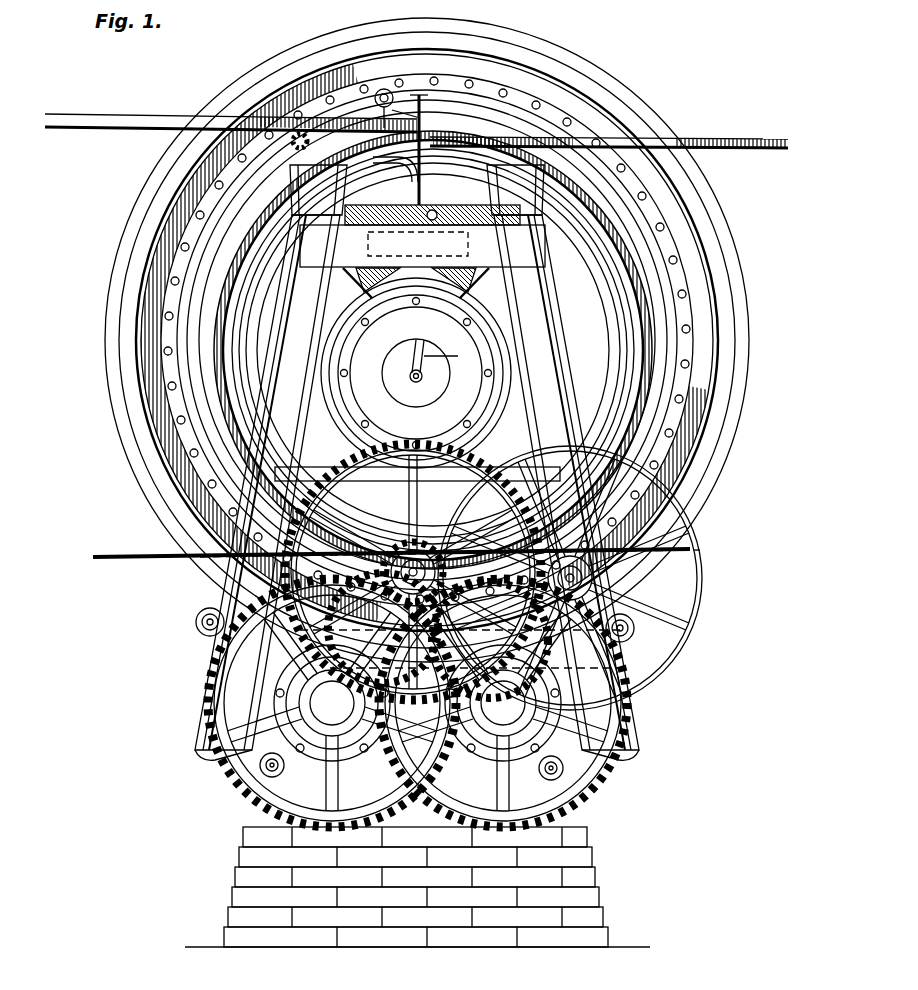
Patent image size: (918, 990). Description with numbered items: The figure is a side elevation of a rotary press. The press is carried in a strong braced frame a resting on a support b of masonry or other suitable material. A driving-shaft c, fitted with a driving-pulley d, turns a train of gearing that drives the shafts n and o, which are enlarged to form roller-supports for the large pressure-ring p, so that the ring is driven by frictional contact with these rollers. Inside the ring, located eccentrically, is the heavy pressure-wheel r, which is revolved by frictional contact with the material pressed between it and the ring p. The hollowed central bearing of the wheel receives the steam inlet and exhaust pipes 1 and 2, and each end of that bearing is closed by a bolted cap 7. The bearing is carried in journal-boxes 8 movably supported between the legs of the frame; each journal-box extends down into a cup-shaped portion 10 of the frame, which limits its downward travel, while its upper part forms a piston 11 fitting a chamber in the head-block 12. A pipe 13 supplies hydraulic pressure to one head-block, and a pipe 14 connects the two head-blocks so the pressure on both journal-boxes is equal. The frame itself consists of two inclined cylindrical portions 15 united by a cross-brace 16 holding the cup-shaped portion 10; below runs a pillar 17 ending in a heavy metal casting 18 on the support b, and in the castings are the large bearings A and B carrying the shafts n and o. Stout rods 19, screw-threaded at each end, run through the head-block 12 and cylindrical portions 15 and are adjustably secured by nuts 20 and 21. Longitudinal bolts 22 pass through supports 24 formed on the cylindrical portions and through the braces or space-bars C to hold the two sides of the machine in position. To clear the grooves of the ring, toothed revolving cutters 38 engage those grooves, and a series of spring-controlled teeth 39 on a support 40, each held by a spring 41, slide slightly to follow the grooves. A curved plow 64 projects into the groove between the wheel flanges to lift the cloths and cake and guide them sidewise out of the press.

The steam inlet pipe 1 is at (412, 356).
The steam exhaust pipe 2 is at (446, 365).
The cap 7 is at (416, 373).
The journal-box 8 is at (466, 297).
The cup-shaped portion 10 is at (380, 482).
The piston 11 is at (466, 245).
The head-block 12 is at (422, 246).
The pipe 13 is at (410, 205).
The pipe 14 is at (424, 168).
The cylindrical portion 15 is at (262, 355).
The cross-brace 16 is at (352, 462).
The pillar 17 is at (392, 545).
The heavy metal casting 18 is at (262, 800).
The rod 19 is at (215, 758).
The nut 20 is at (200, 733).
The nut 21 is at (320, 190).
The longitudinal bolt 22 is at (196, 621).
The support 24 is at (215, 605).
The toothed revolving cutter 38 is at (312, 147).
The tooth 39 is at (433, 147).
The support 40 is at (416, 118).
The spring 41 is at (450, 120).
The curved plow 64 is at (550, 150).
The braced frame a is at (258, 383).
The support b is at (417, 887).
The driving-shaft c is at (592, 578).
The driving-pulley d is at (640, 622).
The shaft n is at (332, 703).
The shaft o is at (503, 703).
The pressure-ring p is at (745, 352).
The pressure-wheel r is at (262, 220).
The bearing A is at (503, 703).
The bearing B is at (332, 703).
The space-bar C is at (205, 672).